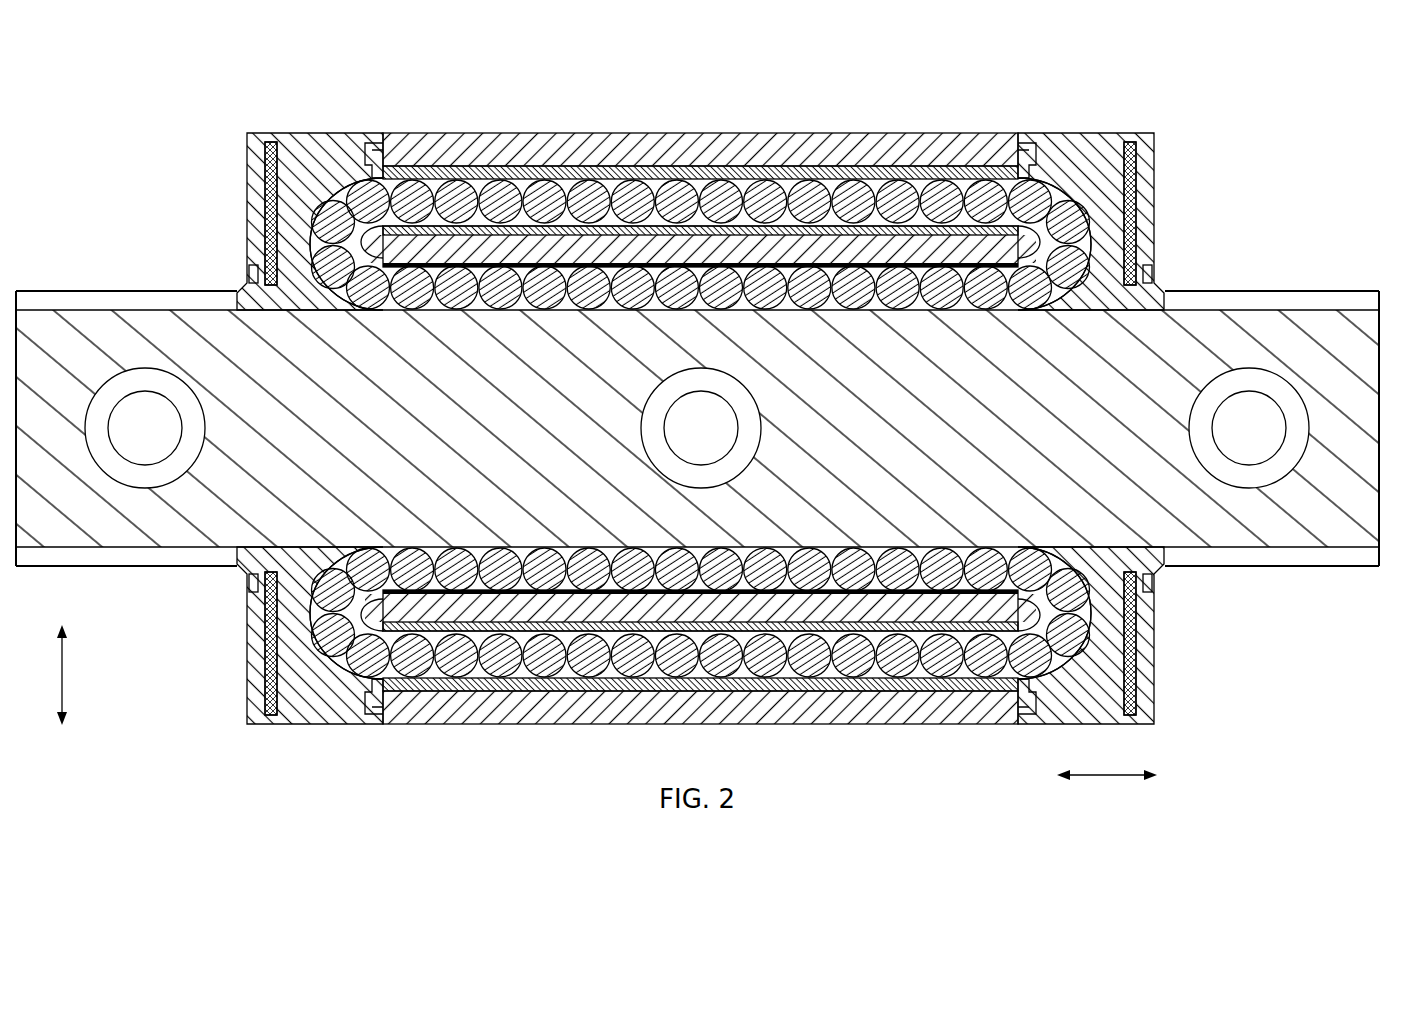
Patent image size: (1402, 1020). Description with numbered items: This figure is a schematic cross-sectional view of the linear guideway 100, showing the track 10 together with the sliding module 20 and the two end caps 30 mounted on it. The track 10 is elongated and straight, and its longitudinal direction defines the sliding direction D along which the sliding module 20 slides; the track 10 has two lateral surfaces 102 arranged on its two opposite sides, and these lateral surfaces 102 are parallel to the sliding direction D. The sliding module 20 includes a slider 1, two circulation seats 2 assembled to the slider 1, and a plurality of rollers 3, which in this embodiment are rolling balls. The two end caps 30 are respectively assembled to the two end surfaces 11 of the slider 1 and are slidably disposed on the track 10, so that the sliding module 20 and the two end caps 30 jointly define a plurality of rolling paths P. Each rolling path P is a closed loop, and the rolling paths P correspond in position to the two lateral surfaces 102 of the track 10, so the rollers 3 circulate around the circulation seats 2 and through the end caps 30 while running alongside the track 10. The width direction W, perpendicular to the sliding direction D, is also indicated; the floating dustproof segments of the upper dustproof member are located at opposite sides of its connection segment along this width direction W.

The linear guideway 100 is at (1312, 110).
The track 10 is at (1306, 311).
The lateral surfaces 102 is at (147, 287).
The sliding module 20 is at (742, 130).
The end caps 30 is at (313, 126).
The end surfaces 11 is at (366, 139).
The slider 1 is at (637, 248).
The circulation seats 2 is at (360, 241).
The rollers 3 is at (853, 200).
The rolling paths P is at (334, 188).
The width direction W is at (44, 675).
The sliding direction D is at (1107, 761).